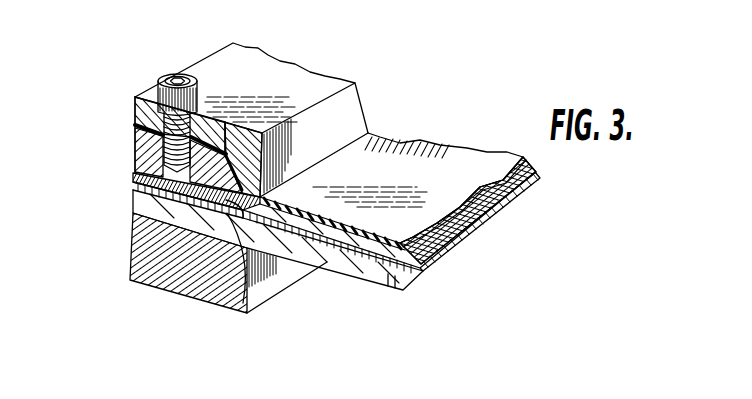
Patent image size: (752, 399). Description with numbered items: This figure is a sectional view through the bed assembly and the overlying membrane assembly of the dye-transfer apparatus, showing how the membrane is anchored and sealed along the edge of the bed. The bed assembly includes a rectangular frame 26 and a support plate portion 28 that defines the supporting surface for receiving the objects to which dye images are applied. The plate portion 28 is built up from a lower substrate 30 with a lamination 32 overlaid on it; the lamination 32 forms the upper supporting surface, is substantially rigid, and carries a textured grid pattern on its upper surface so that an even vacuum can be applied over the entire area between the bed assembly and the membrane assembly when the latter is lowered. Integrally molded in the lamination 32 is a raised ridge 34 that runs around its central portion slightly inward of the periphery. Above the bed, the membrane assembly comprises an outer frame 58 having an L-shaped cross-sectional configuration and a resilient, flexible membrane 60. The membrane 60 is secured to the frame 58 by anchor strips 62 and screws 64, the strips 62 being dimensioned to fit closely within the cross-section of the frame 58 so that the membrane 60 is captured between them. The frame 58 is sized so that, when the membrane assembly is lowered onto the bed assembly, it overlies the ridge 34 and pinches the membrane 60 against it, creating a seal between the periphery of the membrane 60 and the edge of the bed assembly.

The rectangular frame 26 is at (147, 247).
The support plate portion 28 is at (374, 268).
The lower substrate 30 is at (333, 258).
The lamination 32 is at (513, 176).
The raised ridge 34 is at (237, 291).
The outer frame 58 is at (316, 84).
The membrane 60 is at (466, 167).
The anchor strip 62 is at (143, 158).
The screw 64 is at (172, 76).